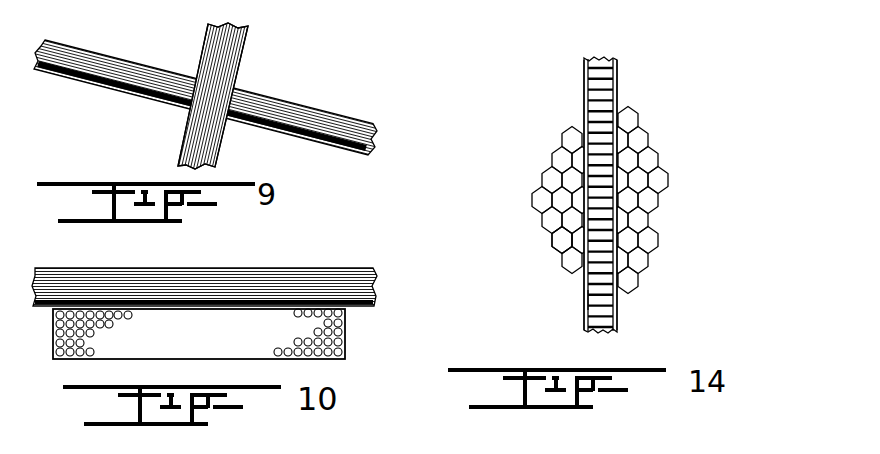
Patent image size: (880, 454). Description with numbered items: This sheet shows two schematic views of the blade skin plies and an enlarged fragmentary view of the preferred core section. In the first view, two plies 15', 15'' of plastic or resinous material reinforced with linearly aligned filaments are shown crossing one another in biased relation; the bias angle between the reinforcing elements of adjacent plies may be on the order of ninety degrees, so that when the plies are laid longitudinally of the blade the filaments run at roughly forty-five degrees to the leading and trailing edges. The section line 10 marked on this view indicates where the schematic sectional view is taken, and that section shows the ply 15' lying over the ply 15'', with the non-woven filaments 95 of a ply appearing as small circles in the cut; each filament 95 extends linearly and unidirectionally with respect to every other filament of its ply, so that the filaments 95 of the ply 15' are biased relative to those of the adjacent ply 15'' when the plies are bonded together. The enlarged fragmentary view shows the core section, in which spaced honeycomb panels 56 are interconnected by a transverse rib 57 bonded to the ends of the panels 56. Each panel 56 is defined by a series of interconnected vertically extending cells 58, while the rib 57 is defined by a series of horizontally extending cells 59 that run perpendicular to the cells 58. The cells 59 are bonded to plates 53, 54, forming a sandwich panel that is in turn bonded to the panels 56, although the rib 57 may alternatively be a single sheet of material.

In FIG. 9, the ply 15' is at (243, 96).
In FIG. 10, the ply 15' is at (234, 275).
In FIG. 9, the ply 15'' is at (205, 90).
In FIG. 10, the ply 15'' is at (234, 339).
In FIG. 9, the section line 10 is at (300, 82).
In FIG. 10, the filaments 95 is at (58, 338).
In FIG. 14, the plate 53 is at (584, 83).
In FIG. 14, the plate 54 is at (618, 98).
In FIG. 14, the honeycomb panel 56 is at (550, 259).
In FIG. 14, the transverse rib 57 is at (574, 304).
In FIG. 14, the vertically extending cells 58 is at (668, 172).
In FIG. 14, the horizontally extending cells 59 is at (595, 59).